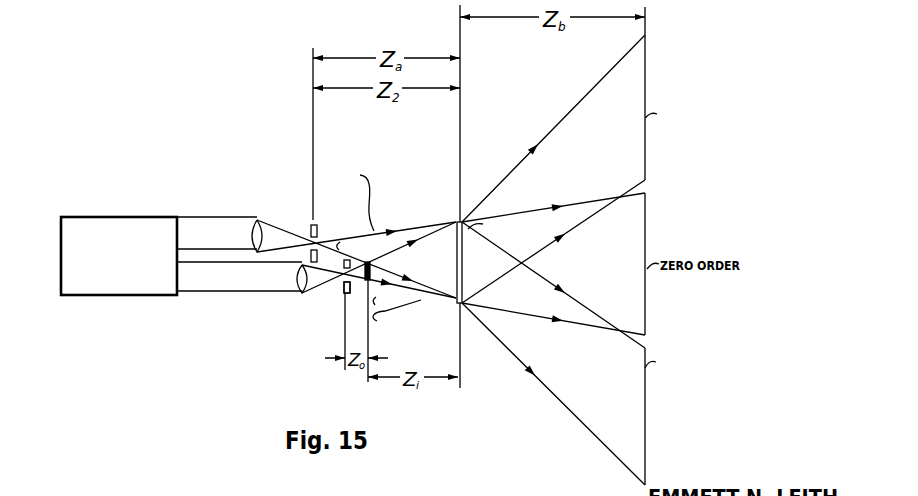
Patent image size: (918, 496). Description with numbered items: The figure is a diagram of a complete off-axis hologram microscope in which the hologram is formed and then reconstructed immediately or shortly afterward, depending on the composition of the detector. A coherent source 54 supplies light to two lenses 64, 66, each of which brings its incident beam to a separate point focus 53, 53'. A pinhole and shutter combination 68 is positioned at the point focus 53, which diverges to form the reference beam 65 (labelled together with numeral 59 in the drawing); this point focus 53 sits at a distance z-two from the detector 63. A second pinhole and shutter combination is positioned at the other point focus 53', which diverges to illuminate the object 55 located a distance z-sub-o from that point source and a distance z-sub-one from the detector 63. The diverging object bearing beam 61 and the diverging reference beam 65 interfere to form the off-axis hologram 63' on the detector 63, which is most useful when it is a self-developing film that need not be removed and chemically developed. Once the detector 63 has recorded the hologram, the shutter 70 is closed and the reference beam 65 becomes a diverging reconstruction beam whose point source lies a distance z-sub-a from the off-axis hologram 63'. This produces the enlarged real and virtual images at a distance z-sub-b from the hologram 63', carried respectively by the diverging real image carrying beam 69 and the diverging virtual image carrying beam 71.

The coherent source 54 is at (137, 217).
The lens 64 is at (253, 237).
The lens 66 is at (297, 281).
The pinhole and shutter combination 68 is at (317, 229).
The point focus 53 is at (352, 257).
The point focus 53' is at (332, 294).
The shutter 70 is at (346, 294).
The object 55 is at (372, 267).
The reference beam 59 is at (317, 222).
The reference beam 65 is at (457, 222).
The object bearing beam 61 is at (421, 292).
The detector 63 is at (507, 260).
The off-axis hologram 63' is at (507, 260).
The real image carrying beam 69 is at (566, 116).
The virtual image carrying beam 71 is at (551, 391).